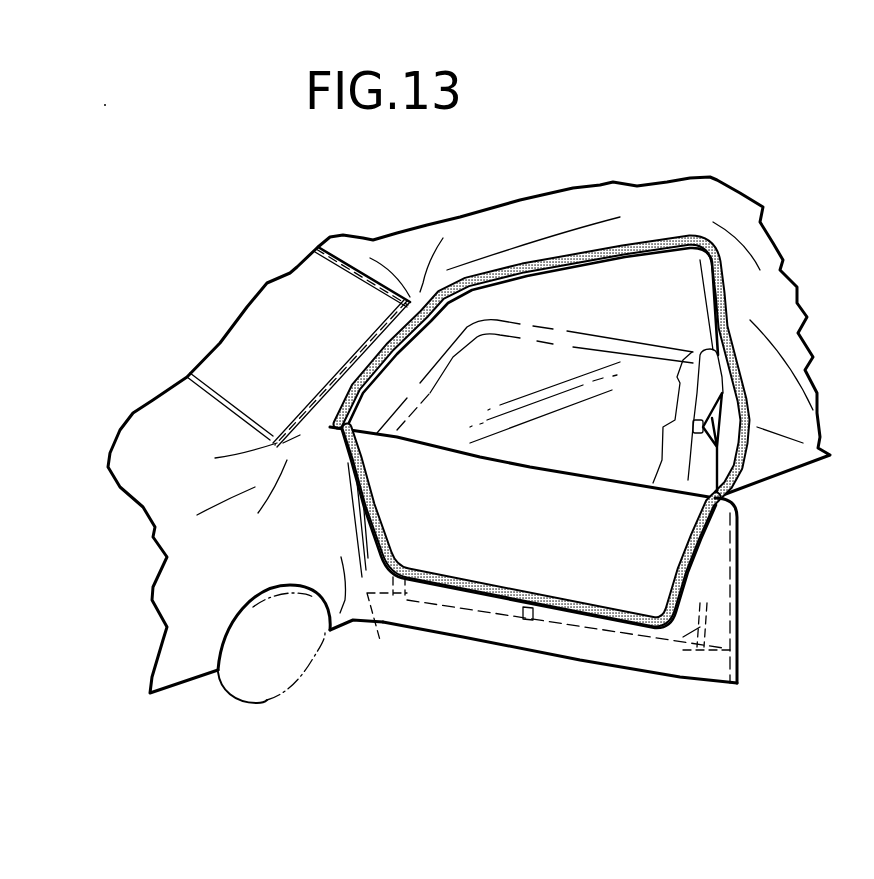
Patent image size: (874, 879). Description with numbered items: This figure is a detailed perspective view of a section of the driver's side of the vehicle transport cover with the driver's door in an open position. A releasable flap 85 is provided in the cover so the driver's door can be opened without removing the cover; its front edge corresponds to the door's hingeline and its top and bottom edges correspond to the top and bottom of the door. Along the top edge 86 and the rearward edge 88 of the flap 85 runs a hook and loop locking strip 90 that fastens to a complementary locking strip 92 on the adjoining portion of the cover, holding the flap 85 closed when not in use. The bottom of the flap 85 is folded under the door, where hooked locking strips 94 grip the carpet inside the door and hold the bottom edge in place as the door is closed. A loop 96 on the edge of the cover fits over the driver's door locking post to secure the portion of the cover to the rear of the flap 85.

The flap 85 is at (657, 545).
The top edge 86 is at (448, 587).
The rearward edge 88 is at (710, 530).
The hook and loop locking strip 90 is at (502, 588).
The complementary locking strip 92 is at (617, 247).
The hooked locking strips 94 is at (683, 650).
The loop 96 is at (722, 440).